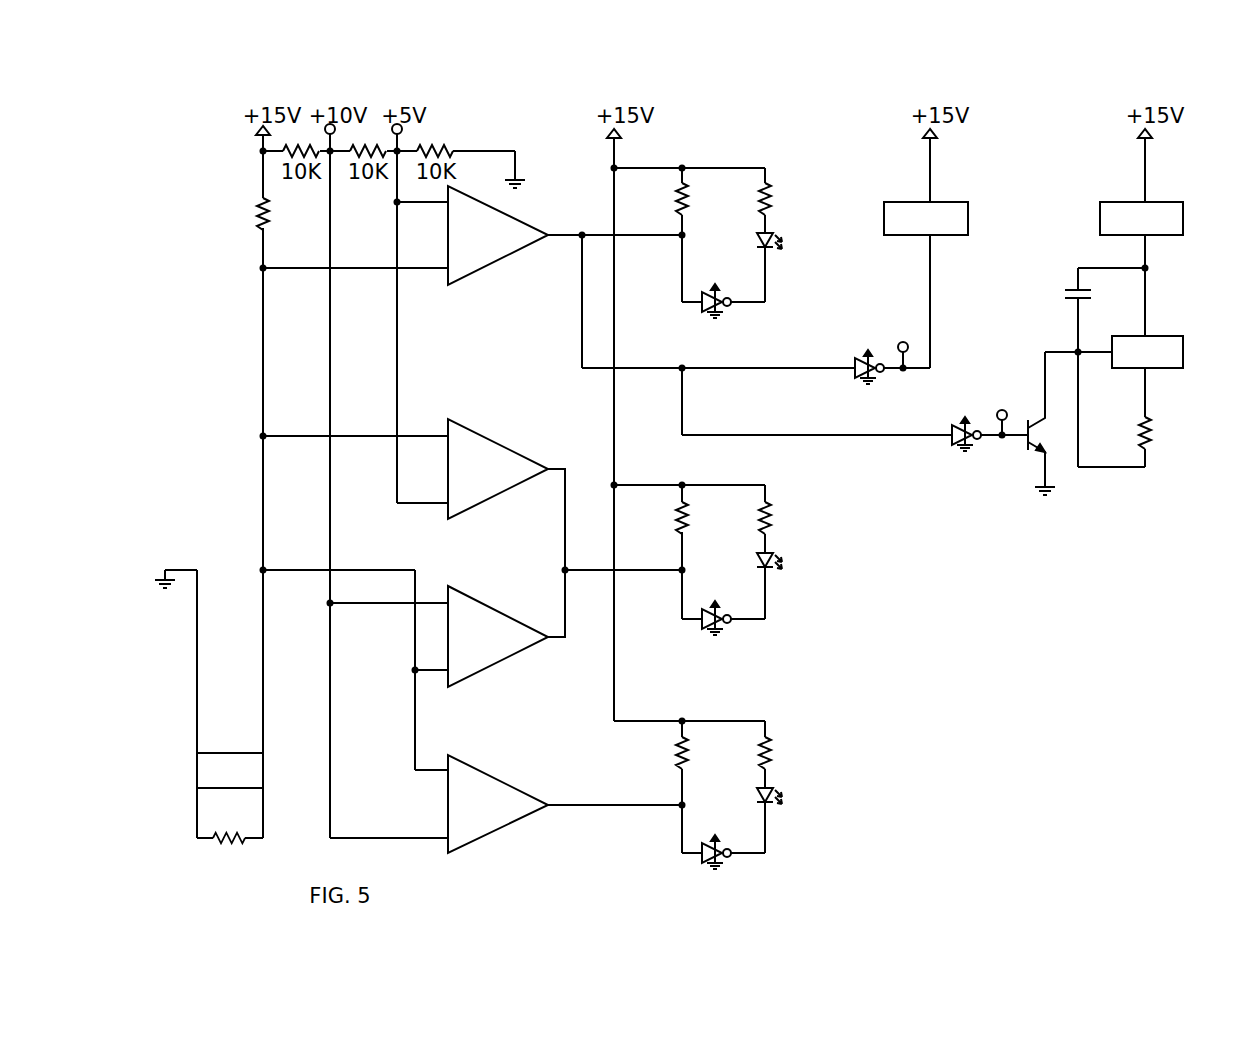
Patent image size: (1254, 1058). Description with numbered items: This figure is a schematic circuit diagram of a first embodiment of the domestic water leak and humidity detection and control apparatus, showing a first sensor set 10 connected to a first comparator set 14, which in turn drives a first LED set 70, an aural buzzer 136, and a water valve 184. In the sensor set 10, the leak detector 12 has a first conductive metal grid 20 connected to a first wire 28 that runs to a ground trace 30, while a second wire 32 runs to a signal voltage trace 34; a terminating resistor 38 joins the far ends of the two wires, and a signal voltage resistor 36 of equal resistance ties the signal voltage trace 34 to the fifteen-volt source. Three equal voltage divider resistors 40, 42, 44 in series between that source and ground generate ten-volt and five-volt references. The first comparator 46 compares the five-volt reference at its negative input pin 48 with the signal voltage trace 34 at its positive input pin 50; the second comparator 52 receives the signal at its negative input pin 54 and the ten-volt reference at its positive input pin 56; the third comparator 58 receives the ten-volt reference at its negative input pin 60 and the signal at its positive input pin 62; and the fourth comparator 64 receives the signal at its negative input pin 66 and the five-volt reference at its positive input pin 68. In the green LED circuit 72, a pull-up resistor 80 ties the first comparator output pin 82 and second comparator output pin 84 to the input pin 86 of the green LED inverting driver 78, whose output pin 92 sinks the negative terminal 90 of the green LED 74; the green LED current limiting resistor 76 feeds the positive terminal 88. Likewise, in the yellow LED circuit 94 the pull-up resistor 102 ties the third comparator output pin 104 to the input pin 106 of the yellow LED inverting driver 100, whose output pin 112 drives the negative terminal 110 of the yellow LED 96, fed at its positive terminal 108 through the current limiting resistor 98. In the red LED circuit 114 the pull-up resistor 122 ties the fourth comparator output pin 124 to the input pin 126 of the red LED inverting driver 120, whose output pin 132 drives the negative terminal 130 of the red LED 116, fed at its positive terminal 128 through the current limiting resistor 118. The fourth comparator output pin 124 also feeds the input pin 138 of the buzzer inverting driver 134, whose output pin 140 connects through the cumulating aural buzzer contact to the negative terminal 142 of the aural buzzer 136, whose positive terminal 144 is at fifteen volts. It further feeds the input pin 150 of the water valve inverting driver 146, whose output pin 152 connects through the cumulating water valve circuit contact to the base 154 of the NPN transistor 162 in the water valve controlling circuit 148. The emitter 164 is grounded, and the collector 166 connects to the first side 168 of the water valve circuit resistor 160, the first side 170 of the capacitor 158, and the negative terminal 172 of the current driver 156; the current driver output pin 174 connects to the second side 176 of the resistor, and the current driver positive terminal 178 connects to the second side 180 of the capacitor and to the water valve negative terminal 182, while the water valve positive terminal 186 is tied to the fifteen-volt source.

The sensor set 10 is at (222, 718).
The leak detector 12 is at (230, 763).
The comparator set 14 is at (551, 541).
The first conductive metal grid 20 is at (1160, 429).
The first wire 28 is at (196, 685).
The ground trace 30 is at (164, 578).
The second wire 32 is at (265, 705).
The signal voltage trace 34 is at (262, 504).
The signal voltage resistor 36 is at (256, 213).
The terminating resistor 38 is at (207, 852).
The voltage divider resistor 40 is at (296, 140).
The voltage divider resistor 42 is at (363, 140).
The voltage divider resistor 44 is at (431, 140).
The first comparator 46 is at (498, 479).
The first comparator negative input pin 48 is at (446, 507).
The first comparator positive input pin 50 is at (446, 432).
The second comparator 52 is at (551, 634).
The second comparator negative input pin 54 is at (446, 674).
The second comparator positive input pin 56 is at (446, 599).
The third comparator 58 is at (551, 800).
The third comparator negative input pin 60 is at (446, 842).
The third comparator positive input pin 62 is at (446, 766).
The fourth comparator 64 is at (551, 249).
The fourth comparator negative input pin 66 is at (446, 272).
The fourth comparator positive input pin 68 is at (446, 205).
The LED set 70 is at (734, 152).
The green LED circuit 72 is at (740, 572).
The green LED 74 is at (779, 562).
The green LED current limiting resistor 76 is at (771, 511).
The green LED inverting driver 78 is at (715, 632).
The green LED pull-up resistor 80 is at (688, 519).
The first comparator output pin 82 is at (550, 468).
The second comparator output pin 84 is at (550, 640).
The green LED inverting driver input pin 86 is at (700, 622).
The green LED positive terminal 88 is at (758, 557).
The green LED negative terminal 90 is at (759, 574).
The green LED inverting driver output pin 92 is at (732, 622).
The yellow LED circuit 94 is at (742, 807).
The yellow LED 96 is at (779, 796).
The yellow LED current limiting resistor 98 is at (771, 747).
The yellow LED inverting driver 100 is at (716, 867).
The yellow LED pull-up resistor 102 is at (688, 754).
The third comparator output pin 104 is at (551, 809).
The yellow LED inverting driver input pin 106 is at (700, 856).
The yellow LED positive terminal 108 is at (758, 791).
The yellow LED negative terminal 110 is at (759, 808).
The yellow LED inverting driver output pin 112 is at (732, 856).
The red LED circuit 114 is at (733, 256).
The red LED 116 is at (779, 243).
The red LED current limiting resistor 118 is at (771, 196).
The red LED inverting driver 120 is at (716, 315).
The red LED pull-up resistor 122 is at (688, 204).
The fourth comparator output pin 124 is at (550, 232).
The red LED inverting driver input pin 126 is at (700, 305).
The red LED positive terminal 128 is at (757, 240).
The red LED negative terminal 130 is at (759, 254).
The red LED inverting driver output pin 132 is at (732, 305).
The buzzer inverting driver 134 is at (861, 378).
The aural buzzer 136 is at (969, 221).
The buzzer inverting driver input pin 138 is at (852, 371).
The buzzer inverting driver output pin 140 is at (888, 372).
The negative terminal 142 is at (933, 237).
The positive terminal 144 is at (933, 203).
The water valve inverting driver 146 is at (962, 446).
The water valve controlling circuit 148 is at (1164, 305).
The water valve inverting driver input pin 150 is at (950, 438).
The water valve inverting driver output pin 152 is at (981, 442).
The base 154 is at (1023, 440).
The current driver 156 is at (1184, 357).
The capacitor 158 is at (1065, 292).
The water valve circuit resistor 160 is at (1152, 436).
The transistor 162 is at (1052, 447).
The emitter 164 is at (1040, 455).
The collector 166 is at (1040, 418).
The first side 168 is at (1150, 452).
The first side 170 is at (1085, 299).
The current driver negative terminal 172 is at (1111, 360).
The current driver output pin 174 is at (1148, 370).
The second side 176 is at (1150, 421).
The current driver positive terminal 178 is at (1148, 337).
The second side 180 is at (1068, 290).
The water valve negative terminal 182 is at (1148, 237).
The water valve 184 is at (1184, 221).
The water valve positive terminal 186 is at (1148, 203).